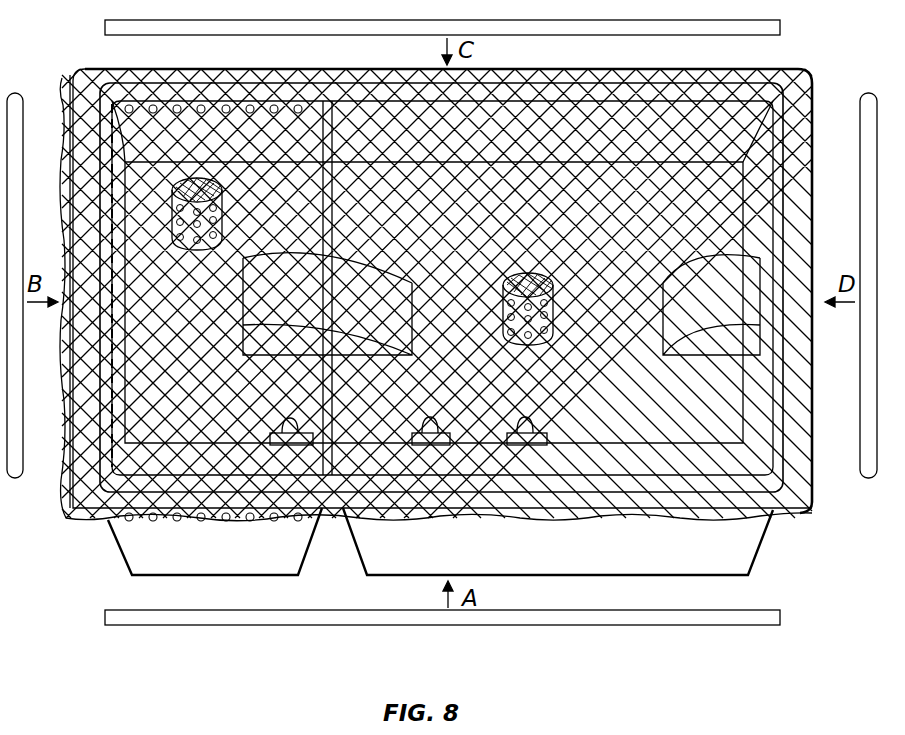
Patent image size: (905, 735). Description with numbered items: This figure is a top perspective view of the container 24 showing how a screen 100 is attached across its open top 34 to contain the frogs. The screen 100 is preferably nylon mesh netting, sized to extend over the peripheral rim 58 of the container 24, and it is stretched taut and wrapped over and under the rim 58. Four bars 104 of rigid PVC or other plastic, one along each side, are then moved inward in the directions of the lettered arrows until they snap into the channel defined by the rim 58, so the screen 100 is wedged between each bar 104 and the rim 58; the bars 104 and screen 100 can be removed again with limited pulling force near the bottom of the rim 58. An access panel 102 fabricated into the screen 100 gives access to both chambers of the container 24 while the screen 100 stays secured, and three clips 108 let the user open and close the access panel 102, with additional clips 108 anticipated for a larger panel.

The bars 104 is at (103, 24).
The screen 100 is at (780, 525).
The rim 58 is at (792, 485).
The open top 34 is at (147, 435).
The access panel 102 is at (343, 510).
The clips 108 is at (425, 446).
The container 24 is at (148, 543).